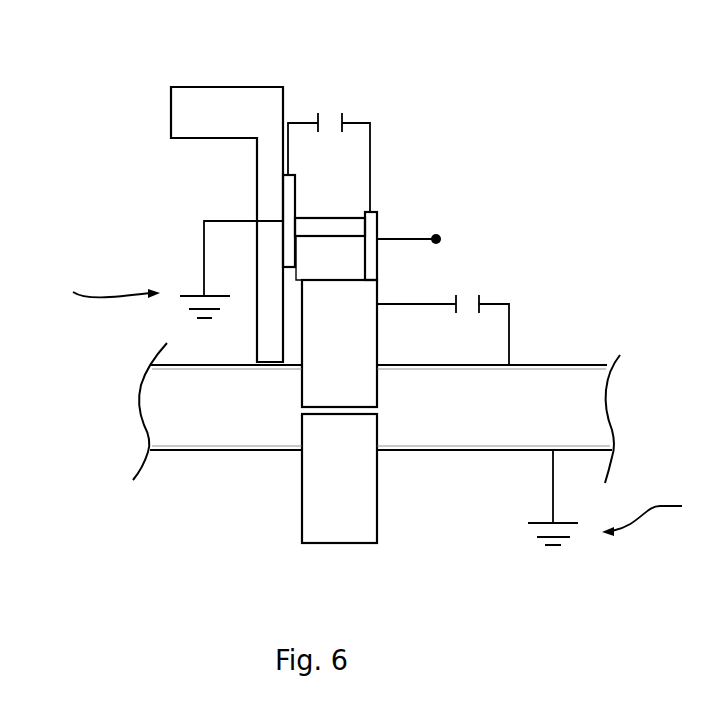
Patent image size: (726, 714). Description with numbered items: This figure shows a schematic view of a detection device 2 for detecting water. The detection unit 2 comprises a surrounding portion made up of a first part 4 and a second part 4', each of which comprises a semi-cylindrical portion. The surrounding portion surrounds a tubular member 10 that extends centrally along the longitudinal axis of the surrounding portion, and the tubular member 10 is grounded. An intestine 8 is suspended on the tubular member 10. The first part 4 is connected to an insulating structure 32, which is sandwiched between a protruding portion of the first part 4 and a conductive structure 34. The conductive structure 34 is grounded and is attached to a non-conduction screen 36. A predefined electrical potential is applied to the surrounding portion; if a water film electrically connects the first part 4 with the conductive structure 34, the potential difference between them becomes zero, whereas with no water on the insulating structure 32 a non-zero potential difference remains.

The detection device 2 is at (381, 279).
The first part 4 is at (370, 343).
The second part 4' is at (296, 478).
The intestine 8 is at (502, 453).
The tubular member 10 is at (410, 452).
The insulating structure 32 is at (320, 218).
The conductive structure 34 is at (297, 243).
The non-conduction screen 36 is at (228, 86).